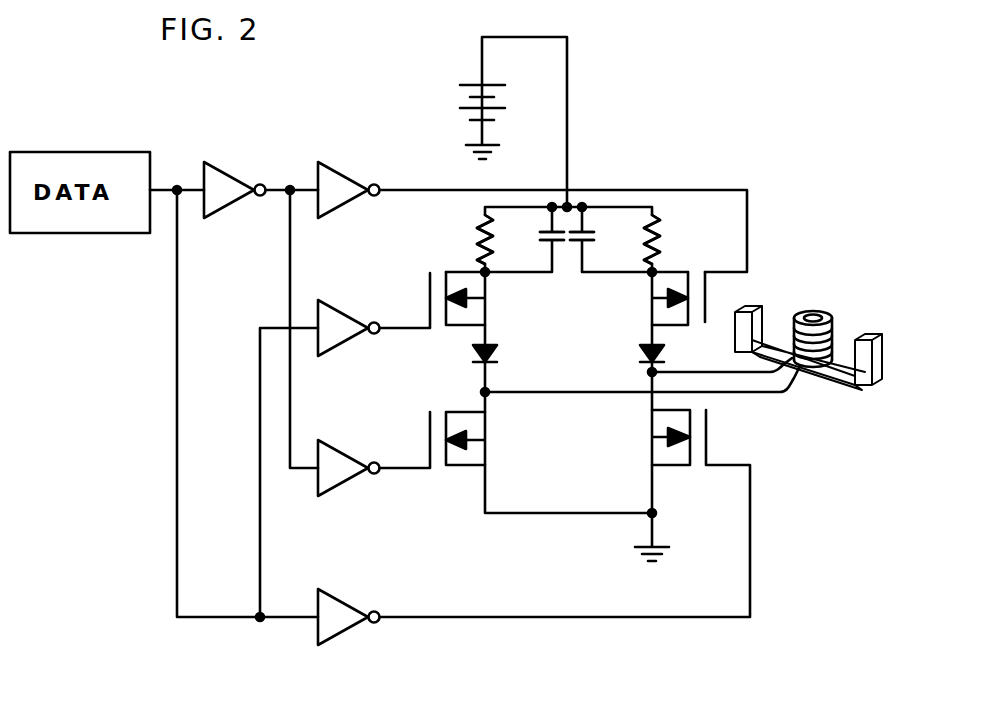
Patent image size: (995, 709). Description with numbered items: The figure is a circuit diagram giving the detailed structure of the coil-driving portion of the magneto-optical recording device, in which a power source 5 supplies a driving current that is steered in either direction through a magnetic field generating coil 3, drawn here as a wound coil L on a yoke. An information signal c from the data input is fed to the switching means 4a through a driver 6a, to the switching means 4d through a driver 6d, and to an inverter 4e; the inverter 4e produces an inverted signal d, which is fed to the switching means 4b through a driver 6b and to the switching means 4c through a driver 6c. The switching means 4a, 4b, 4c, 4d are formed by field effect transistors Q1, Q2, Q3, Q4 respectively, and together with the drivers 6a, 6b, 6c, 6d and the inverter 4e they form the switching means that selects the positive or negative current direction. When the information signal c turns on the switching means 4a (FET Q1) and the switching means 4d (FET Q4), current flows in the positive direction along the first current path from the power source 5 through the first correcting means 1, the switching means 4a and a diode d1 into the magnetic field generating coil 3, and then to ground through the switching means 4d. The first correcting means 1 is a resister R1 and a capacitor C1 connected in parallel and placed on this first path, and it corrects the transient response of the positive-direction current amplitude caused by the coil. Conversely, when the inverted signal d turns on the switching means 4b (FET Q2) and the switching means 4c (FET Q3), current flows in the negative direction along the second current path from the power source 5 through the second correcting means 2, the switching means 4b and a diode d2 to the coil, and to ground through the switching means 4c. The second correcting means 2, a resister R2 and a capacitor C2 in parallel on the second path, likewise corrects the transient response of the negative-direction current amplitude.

The first correcting means 1 is at (522, 205).
The second correcting means 2 is at (636, 206).
The magnetic field generating coil 3 is at (808, 338).
The switching means 4a is at (436, 330).
The switching means 4b is at (715, 290).
The switching means 4c is at (440, 472).
The switching means 4d is at (716, 434).
The inverter 4e is at (230, 187).
The power source 5 is at (450, 98).
The driver 6a is at (343, 320).
The driver 6b is at (344, 187).
The driver 6c is at (348, 456).
The driver 6d is at (349, 605).
The information signal c is at (178, 385).
The inverted signal d is at (290, 412).
The coil L is at (836, 325).
The resister R1 is at (485, 239).
The resister R2 is at (652, 239).
The capacitor C1 is at (552, 236).
The capacitor C2 is at (582, 236).
The FET Q1 is at (484, 298).
The FET Q2 is at (647, 298).
The FET Q3 is at (484, 438).
The FET Q4 is at (651, 437).
The diode d1 is at (496, 353).
The diode d2 is at (630, 359).